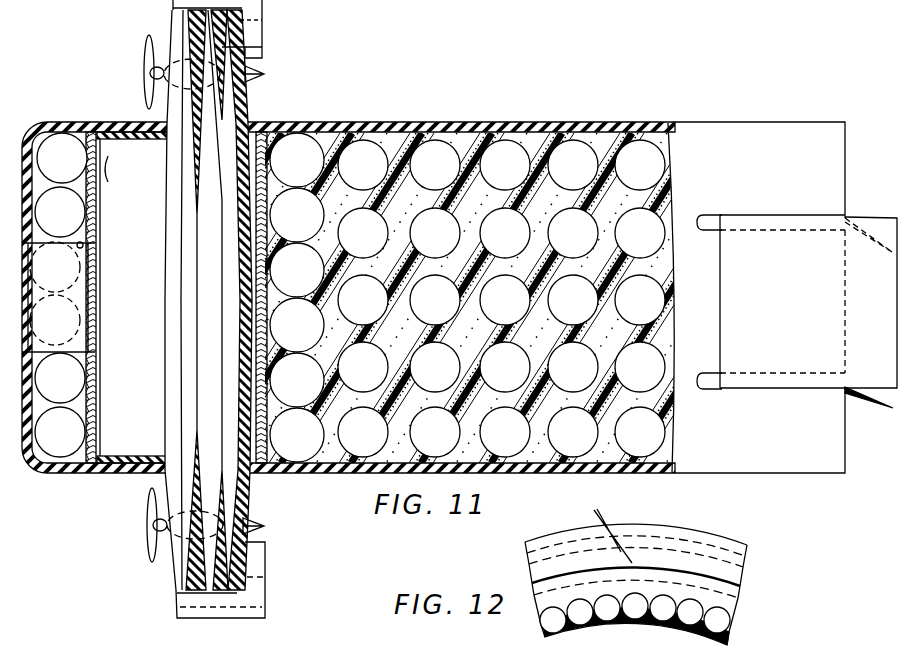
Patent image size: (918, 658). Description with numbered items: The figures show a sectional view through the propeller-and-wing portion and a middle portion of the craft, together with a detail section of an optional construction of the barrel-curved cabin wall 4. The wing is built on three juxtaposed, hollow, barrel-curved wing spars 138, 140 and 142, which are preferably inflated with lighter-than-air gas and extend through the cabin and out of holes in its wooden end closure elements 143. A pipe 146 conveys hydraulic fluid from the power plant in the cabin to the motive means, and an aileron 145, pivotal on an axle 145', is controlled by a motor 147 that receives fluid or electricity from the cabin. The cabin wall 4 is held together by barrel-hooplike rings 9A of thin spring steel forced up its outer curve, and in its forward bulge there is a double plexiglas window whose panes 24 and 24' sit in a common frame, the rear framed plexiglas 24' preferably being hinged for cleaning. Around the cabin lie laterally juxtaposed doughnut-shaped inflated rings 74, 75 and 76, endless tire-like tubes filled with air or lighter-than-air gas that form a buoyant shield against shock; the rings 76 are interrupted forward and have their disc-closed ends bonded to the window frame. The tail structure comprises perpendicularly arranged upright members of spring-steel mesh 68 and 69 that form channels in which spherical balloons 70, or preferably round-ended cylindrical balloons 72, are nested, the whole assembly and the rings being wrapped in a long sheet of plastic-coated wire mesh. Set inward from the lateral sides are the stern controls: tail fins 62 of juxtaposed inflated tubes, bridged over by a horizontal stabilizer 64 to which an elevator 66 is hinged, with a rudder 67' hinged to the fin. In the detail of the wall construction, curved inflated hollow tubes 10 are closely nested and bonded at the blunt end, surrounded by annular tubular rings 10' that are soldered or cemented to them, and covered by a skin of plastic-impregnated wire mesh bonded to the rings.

In FIG. 11, the motor 147 is at (178, 17).
In FIG. 11, the aileron 145 is at (242, 29).
In FIG. 11, the axle 145' is at (192, 580).
In FIG. 11, the wing spar 138 is at (165, 172).
In FIG. 11, the wing spar 140 is at (196, 130).
In FIG. 11, the wing spar 142 is at (238, 187).
In FIG. 11, the cabin-end closure element 143 is at (132, 297).
In FIG. 11, the pipe 146 is at (181, 430).
In FIG. 11, the hoop 9A is at (278, 347).
In FIG. 11, the plexiglas window 24 is at (58, 297).
In FIG. 11, the rear framed plexiglas 24' is at (55, 320).
In FIG. 11, the inflated ring 74 is at (51, 170).
In FIG. 11, the inflated ring 75 is at (49, 224).
In FIG. 11, the inflated ring 76 is at (286, 282).
In FIG. 11, the balloon 70 is at (424, 245).
In FIG. 11, the balloon 72 is at (424, 379).
In FIG. 11, the mesh member 68 is at (598, 132).
In FIG. 11, the mesh member 69 is at (674, 330).
In FIG. 11, the tail fin 62 is at (712, 220).
In FIG. 11, the horizontal stabilizer 64 is at (760, 311).
In FIG. 11, the elevator 66 is at (859, 311).
In FIG. 11, the rudder 67' is at (869, 415).
In FIG. 12, the annular tubular ring 10' is at (597, 530).
In FIG. 12, the cabin wall 4 is at (680, 528).
In FIG. 12, the inflated hollow tube 10 is at (661, 619).